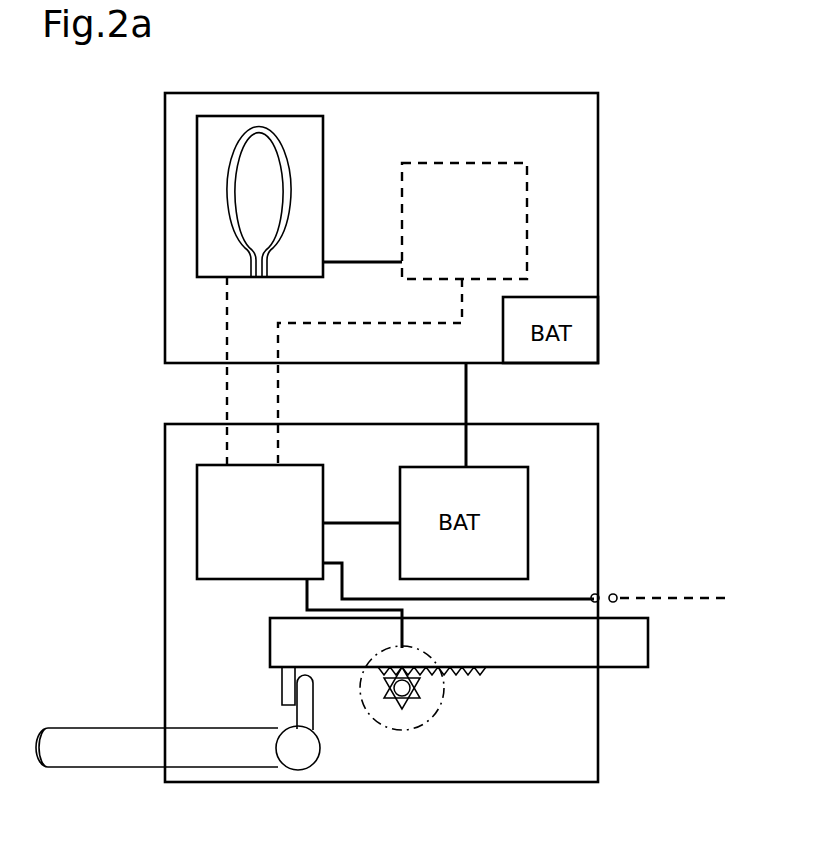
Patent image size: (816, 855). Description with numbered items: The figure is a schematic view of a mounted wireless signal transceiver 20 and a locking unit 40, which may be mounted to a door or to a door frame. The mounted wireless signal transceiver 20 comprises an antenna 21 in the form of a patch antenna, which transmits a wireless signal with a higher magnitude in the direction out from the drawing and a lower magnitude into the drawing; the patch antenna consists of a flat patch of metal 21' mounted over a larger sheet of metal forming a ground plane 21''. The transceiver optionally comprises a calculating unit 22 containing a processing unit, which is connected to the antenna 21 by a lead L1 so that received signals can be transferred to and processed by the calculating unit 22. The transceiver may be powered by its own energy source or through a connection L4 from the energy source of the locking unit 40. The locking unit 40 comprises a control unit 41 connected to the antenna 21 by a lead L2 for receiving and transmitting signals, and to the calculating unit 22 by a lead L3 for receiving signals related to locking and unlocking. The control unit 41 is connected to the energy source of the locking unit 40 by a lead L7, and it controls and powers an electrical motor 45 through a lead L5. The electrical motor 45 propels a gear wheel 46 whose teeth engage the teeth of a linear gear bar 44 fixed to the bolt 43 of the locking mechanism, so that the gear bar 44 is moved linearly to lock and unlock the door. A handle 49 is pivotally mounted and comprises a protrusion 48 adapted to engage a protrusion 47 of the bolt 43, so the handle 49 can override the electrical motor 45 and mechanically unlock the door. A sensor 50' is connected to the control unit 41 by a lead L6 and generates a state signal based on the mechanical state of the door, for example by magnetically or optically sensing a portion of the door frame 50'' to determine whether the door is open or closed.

The mounted wireless signal transceiver 20 is at (598, 193).
The antenna 21 is at (296, 196).
The patch of metal 21' is at (259, 158).
The ground plane 21'' is at (284, 158).
The calculating unit 22 is at (480, 163).
The lead L1 is at (368, 260).
The lead L2 is at (226, 349).
The lead L3 is at (280, 349).
The connection L4 is at (468, 410).
The locking unit 40 is at (598, 487).
The control unit 41 is at (325, 468).
The lead L5 is at (305, 594).
The lead L6 is at (533, 597).
The lead L7 is at (368, 521).
The sensor 50' is at (622, 565).
The door frame 50'' is at (669, 565).
The bolt 43 is at (648, 658).
The linear gear bar 44 is at (450, 675).
The electrical motor 45 is at (441, 706).
The gear wheel 46 is at (412, 702).
The protrusion 47 is at (282, 696).
The protrusion 48 is at (314, 700).
The handle 49 is at (110, 727).